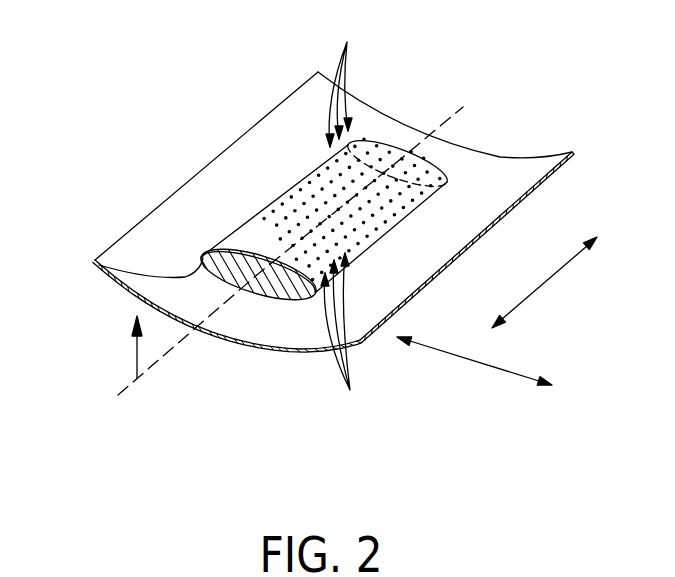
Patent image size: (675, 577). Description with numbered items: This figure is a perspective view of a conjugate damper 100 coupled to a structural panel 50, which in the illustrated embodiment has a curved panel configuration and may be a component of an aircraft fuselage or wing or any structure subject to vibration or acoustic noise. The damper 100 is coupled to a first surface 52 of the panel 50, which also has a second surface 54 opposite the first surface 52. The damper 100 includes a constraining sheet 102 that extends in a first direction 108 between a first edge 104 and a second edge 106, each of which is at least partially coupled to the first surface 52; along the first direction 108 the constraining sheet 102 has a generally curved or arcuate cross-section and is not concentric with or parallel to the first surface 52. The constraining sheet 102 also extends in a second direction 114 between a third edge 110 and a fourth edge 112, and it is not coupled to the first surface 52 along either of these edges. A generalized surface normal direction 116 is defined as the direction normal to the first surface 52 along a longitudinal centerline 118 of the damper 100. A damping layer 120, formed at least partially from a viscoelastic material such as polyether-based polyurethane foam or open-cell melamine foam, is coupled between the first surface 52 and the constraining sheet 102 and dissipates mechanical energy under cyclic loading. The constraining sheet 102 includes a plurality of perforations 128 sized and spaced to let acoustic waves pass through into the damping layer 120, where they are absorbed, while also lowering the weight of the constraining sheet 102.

The structural panel 50 is at (533, 157).
The first surface 52 is at (293, 107).
The second surface 54 is at (568, 168).
The conjugate damper 100 is at (382, 147).
The constraining sheet 102 is at (420, 157).
The first edge 104 is at (283, 185).
The second edge 106 is at (443, 197).
The first direction 108 is at (460, 357).
The third edge 110 is at (240, 244).
The fourth edge 112 is at (447, 175).
The second direction 114 is at (557, 278).
The surface normal direction 116 is at (137, 350).
The longitudinal centerline 118 is at (465, 87).
The damping layer 120 is at (110, 277).
The perforations 128 is at (346, 219).